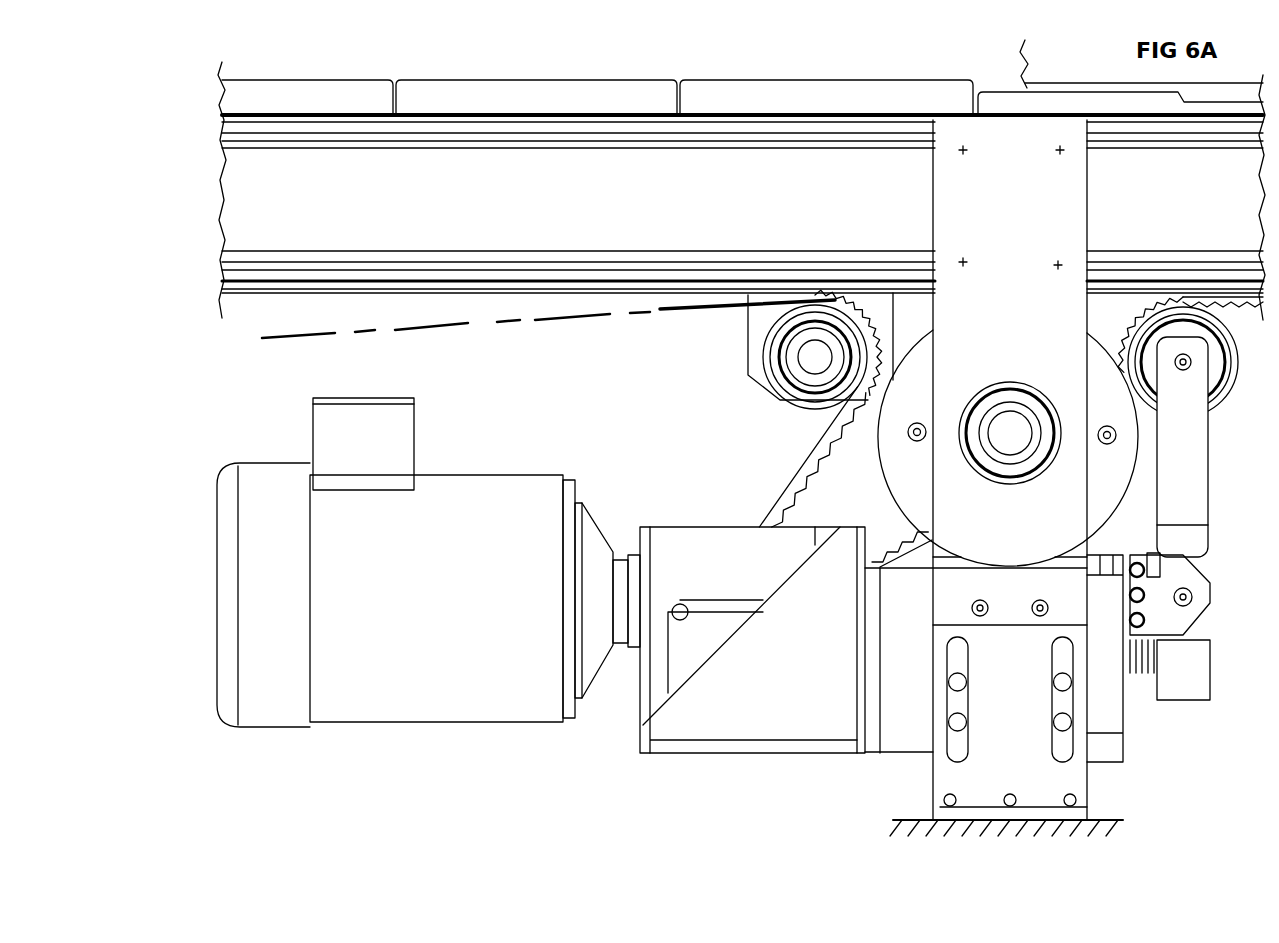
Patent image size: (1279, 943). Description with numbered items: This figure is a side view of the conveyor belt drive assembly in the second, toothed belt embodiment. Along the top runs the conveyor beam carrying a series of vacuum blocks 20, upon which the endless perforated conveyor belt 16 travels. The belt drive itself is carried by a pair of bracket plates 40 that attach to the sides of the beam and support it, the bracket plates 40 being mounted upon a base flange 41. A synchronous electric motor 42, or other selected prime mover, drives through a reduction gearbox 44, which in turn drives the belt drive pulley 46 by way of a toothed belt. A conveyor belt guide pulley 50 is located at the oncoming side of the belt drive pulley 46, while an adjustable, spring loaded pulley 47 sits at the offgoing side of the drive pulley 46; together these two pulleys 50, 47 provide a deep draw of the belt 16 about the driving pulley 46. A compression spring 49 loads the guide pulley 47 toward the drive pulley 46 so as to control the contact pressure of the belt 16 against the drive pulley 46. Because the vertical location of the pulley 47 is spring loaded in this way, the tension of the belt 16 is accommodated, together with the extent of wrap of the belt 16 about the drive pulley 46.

The endless perforated conveyor belt 16 is at (606, 320).
The vacuum blocks 20 is at (625, 105).
The bracket plates 40 is at (1018, 316).
The base flange 41 is at (1037, 807).
The synchronous electric motor 42 is at (496, 438).
The reduction gearbox 44 is at (709, 490).
The belt drive pulley 46 is at (905, 458).
The adjustable spring loaded pulley 47 is at (1215, 395).
The compression spring 49 is at (1142, 675).
The conveyor belt guide pulley 50 is at (800, 408).